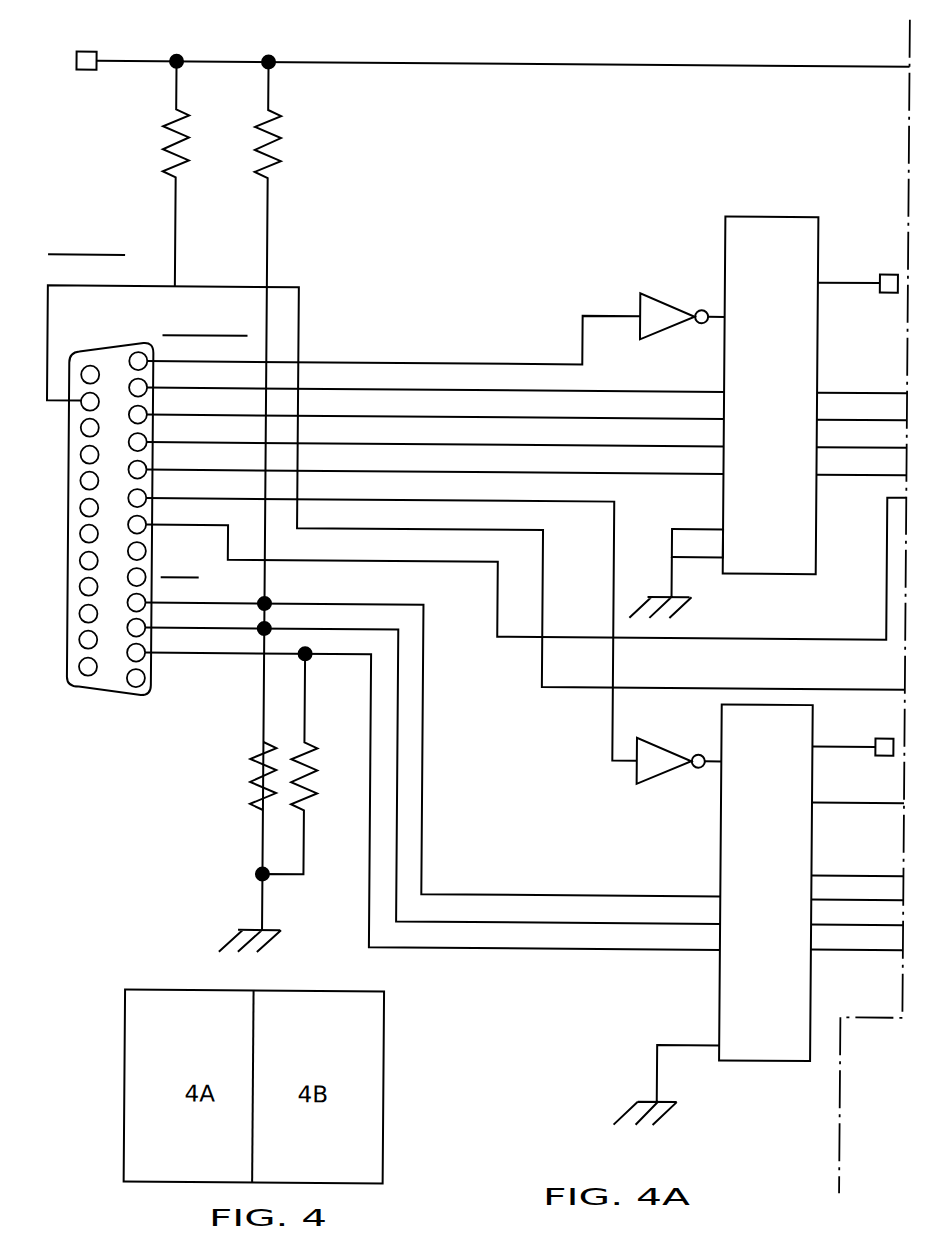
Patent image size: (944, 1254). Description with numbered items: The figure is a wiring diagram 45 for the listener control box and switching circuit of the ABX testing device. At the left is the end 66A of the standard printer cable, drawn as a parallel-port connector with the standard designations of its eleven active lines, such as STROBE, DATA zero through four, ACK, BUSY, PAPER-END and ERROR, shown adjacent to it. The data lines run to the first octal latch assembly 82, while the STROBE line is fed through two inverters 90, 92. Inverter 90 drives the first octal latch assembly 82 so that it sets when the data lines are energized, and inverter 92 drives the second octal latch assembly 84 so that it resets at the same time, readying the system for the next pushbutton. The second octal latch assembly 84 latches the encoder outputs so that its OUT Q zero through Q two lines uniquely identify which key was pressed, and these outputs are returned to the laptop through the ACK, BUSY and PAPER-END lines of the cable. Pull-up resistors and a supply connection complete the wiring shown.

The wiring diagram 45 is at (94, 184).
The end of cable 66A is at (100, 692).
The inverter 90 is at (658, 282).
The first octal latch assembly 82 is at (754, 569).
The inverter 92 is at (663, 773).
The second octal latch assembly 84 is at (790, 1057).